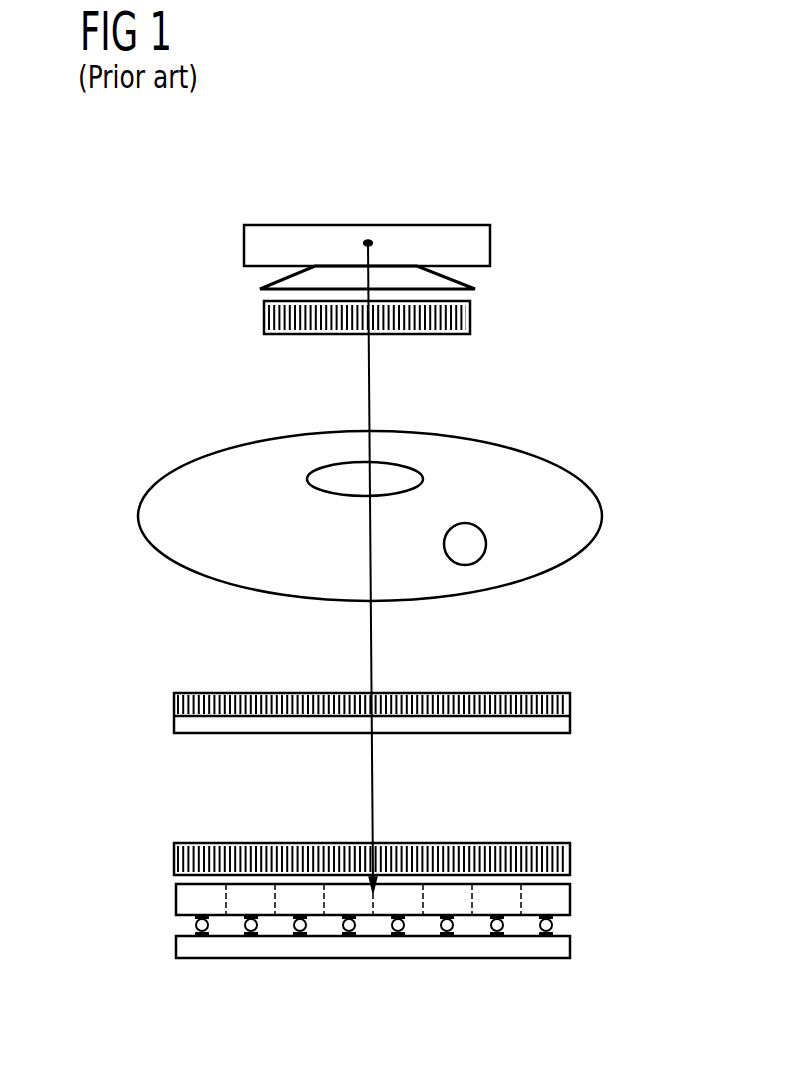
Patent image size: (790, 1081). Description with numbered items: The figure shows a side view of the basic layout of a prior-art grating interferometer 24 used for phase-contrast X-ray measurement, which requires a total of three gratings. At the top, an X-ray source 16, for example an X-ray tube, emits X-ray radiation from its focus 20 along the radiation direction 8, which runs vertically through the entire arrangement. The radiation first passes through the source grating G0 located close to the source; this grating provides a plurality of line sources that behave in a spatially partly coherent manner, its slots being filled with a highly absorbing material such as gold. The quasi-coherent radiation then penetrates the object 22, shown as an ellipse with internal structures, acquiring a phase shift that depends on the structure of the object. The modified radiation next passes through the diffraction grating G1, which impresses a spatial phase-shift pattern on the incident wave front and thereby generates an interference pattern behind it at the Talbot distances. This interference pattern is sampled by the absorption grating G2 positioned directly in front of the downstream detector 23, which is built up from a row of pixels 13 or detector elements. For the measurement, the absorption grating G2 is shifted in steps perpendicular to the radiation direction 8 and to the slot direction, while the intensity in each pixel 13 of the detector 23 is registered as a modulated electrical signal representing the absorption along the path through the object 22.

The grating interferometer 24 is at (118, 383).
The X-ray source 16 is at (540, 214).
The focus 20 is at (368, 238).
The radiation direction 8 is at (374, 783).
The source grating G0 is at (472, 313).
The object 22 is at (604, 512).
The diffraction grating G1 is at (570, 702).
The absorption grating G2 is at (570, 852).
The detector 23 is at (592, 873).
The pixel 13 is at (285, 905).